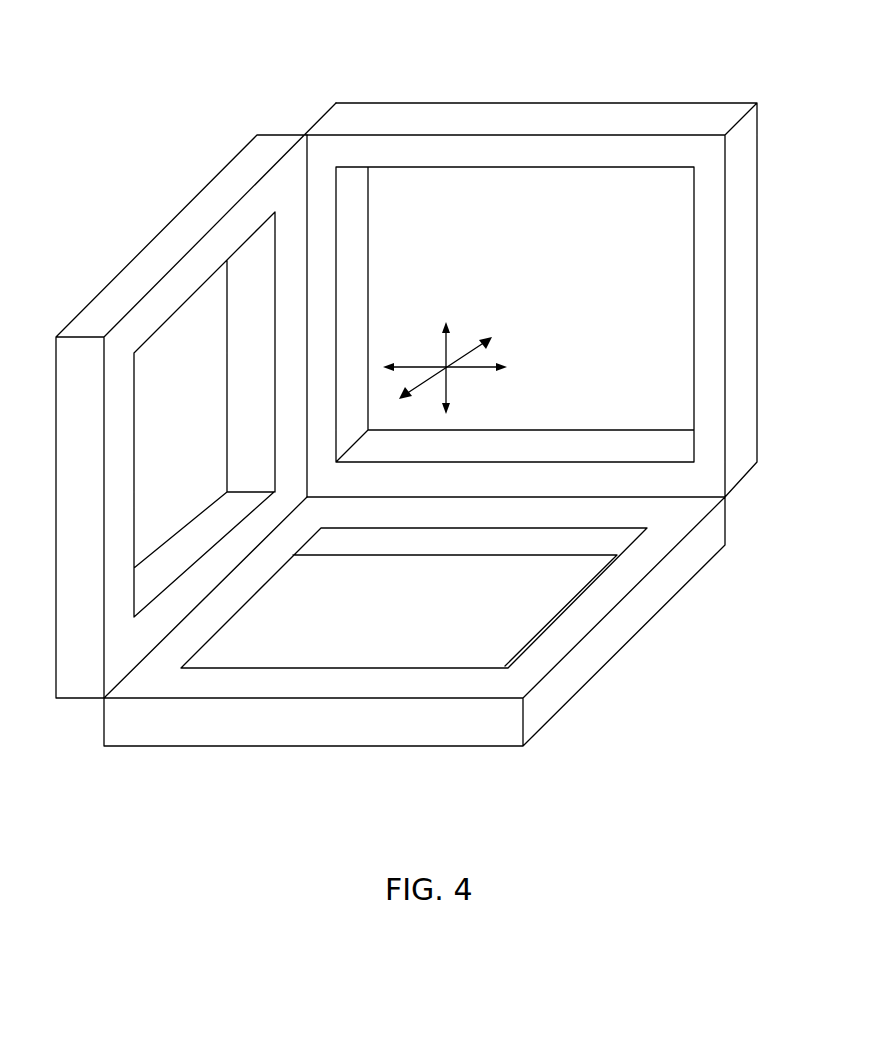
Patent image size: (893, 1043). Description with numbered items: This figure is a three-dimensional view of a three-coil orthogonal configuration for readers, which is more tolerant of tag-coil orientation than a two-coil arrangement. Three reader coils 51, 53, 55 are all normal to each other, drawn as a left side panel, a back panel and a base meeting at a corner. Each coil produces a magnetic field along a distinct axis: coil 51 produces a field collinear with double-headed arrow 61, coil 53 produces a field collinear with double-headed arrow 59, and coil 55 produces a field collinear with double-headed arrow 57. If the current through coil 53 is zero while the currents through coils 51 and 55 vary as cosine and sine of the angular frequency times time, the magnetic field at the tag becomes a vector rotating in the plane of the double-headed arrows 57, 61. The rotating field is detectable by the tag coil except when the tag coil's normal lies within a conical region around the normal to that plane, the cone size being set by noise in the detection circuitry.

The reader coil 51 is at (133, 258).
The reader coil 53 is at (523, 103).
The reader coil 55 is at (633, 635).
The double-headed arrow 57 is at (443, 353).
The double-headed arrow 59 is at (477, 354).
The double-headed arrow 61 is at (475, 370).